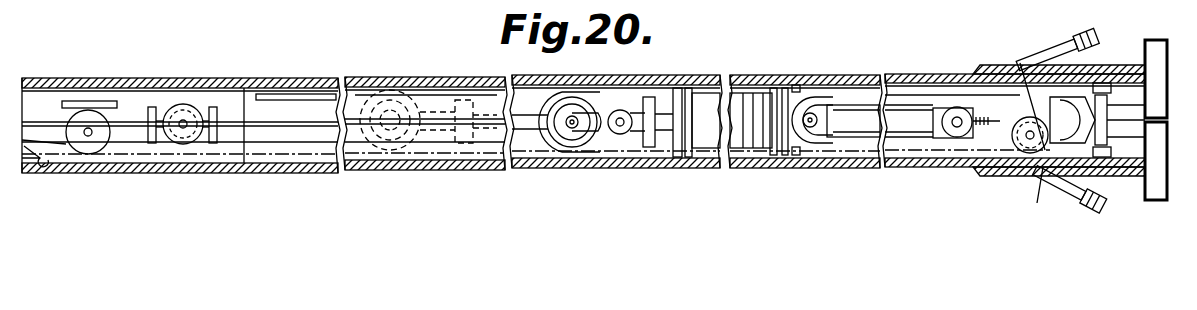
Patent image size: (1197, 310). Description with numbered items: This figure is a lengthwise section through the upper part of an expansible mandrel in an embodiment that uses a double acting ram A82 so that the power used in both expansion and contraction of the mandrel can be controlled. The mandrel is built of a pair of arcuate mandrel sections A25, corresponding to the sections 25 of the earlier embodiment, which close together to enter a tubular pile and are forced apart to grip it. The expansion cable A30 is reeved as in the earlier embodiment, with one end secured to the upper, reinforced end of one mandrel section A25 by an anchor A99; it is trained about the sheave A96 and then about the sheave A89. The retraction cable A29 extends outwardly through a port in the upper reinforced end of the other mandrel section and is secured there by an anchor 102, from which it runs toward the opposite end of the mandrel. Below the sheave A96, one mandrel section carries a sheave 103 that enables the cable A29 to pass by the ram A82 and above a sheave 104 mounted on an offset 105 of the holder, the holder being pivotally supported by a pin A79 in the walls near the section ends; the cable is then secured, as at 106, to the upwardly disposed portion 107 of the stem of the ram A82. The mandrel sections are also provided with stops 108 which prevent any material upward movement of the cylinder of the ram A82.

The expansion cable A30 is at (210, 78).
The retraction cable A29 is at (38, 163).
The sheave 103 is at (108, 138).
The sheave A96 is at (187, 142).
The mandrel section A25 is at (390, 68).
The mandrel section 25 is at (367, 172).
The sheave A89 is at (400, 172).
The double acting ram A82 is at (752, 136).
The stop 108 is at (805, 75).
The upwardly disposed portion of the ram stem 107 is at (900, 115).
The cable securement 106 is at (957, 104).
The offset of the holder 105 is at (1026, 75).
The anchor A99 is at (1056, 52).
The pin A79 is at (1108, 66).
The sheave 104 is at (1011, 182).
The anchor 102 is at (1074, 198).